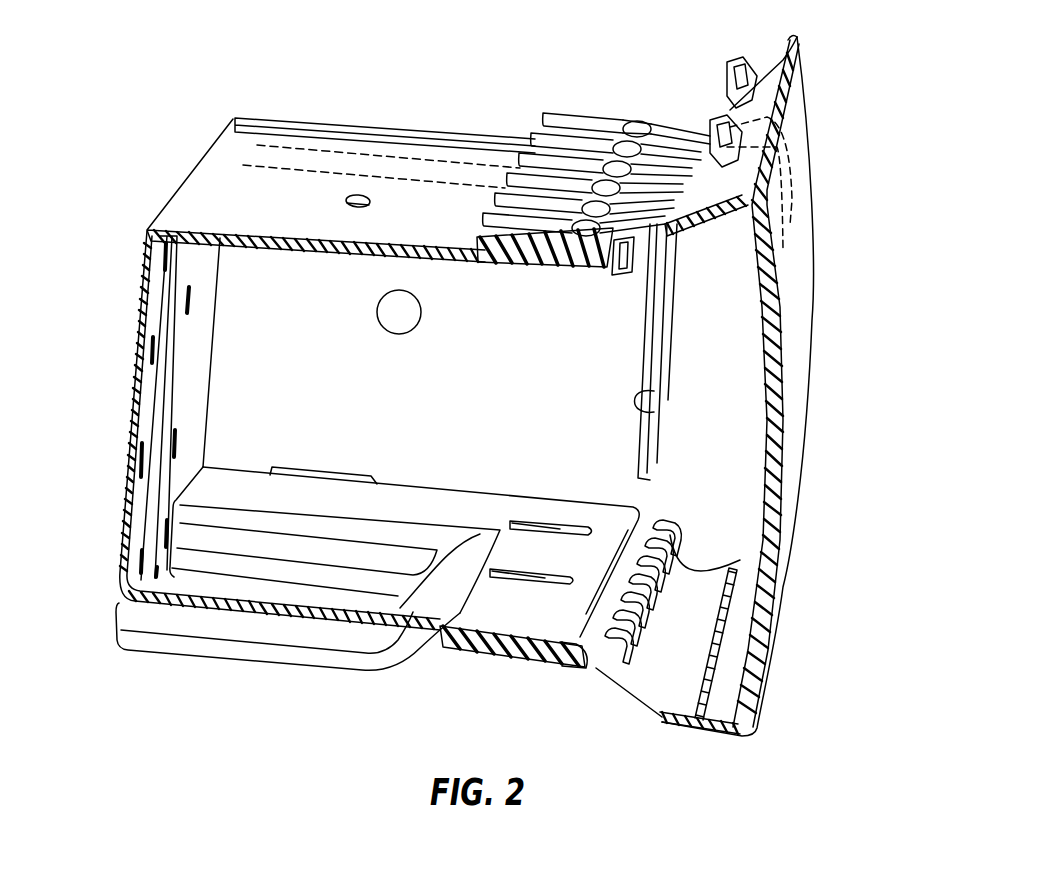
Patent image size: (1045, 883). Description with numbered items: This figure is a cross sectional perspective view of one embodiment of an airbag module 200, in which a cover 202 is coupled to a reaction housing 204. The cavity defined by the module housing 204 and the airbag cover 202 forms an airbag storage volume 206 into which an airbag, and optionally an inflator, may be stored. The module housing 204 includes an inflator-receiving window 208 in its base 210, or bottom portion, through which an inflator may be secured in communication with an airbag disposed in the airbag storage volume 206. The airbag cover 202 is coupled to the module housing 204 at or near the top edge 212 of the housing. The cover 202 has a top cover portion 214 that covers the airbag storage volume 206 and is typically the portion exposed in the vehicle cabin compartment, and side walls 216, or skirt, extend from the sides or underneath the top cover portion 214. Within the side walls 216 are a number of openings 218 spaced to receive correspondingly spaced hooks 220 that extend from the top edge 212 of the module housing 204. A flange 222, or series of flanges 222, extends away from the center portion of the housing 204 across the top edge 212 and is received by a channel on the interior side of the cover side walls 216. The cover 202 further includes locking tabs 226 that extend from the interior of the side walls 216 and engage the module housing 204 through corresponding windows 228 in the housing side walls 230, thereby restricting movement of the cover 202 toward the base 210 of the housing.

The airbag module 200 is at (175, 124).
The cover 202 is at (812, 261).
The reaction housing 204 is at (168, 199).
The airbag storage volume 206 is at (252, 383).
The inflator-receiving window 208 is at (168, 295).
The base 210 is at (123, 467).
The top edge 212 is at (668, 352).
The top cover portion 214 is at (800, 320).
The side walls 216 is at (615, 118).
The openings 218 is at (692, 127).
The hooks 220 is at (605, 188).
The flange 222 is at (563, 667).
The locking tabs 226 is at (522, 518).
The windows 228 is at (576, 524).
The housing side walls 230 is at (487, 596).